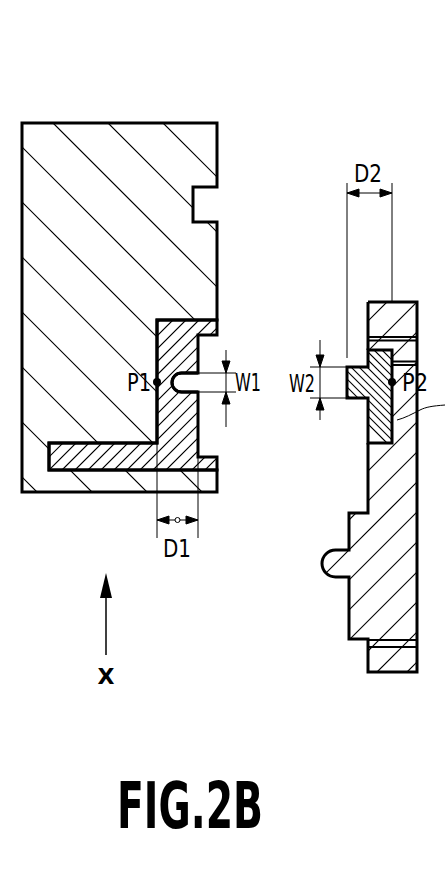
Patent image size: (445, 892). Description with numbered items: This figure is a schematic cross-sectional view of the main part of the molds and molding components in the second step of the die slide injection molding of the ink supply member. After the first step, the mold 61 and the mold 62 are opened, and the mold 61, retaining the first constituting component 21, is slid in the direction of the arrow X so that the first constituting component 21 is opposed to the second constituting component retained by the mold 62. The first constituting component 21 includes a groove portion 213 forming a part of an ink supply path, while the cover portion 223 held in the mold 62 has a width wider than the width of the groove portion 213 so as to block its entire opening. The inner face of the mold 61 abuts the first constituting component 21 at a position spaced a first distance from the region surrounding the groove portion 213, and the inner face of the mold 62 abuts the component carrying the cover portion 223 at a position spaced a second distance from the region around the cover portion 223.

The first mold 61 is at (68, 133).
The first constituting component 21 is at (65, 462).
The groove portion 213 is at (185, 387).
The second mold 62 is at (411, 314).
The cover portion 223 is at (346, 380).